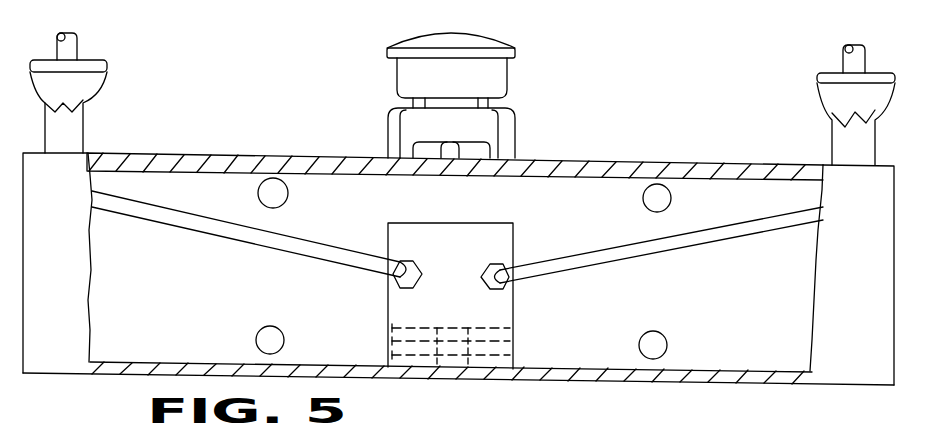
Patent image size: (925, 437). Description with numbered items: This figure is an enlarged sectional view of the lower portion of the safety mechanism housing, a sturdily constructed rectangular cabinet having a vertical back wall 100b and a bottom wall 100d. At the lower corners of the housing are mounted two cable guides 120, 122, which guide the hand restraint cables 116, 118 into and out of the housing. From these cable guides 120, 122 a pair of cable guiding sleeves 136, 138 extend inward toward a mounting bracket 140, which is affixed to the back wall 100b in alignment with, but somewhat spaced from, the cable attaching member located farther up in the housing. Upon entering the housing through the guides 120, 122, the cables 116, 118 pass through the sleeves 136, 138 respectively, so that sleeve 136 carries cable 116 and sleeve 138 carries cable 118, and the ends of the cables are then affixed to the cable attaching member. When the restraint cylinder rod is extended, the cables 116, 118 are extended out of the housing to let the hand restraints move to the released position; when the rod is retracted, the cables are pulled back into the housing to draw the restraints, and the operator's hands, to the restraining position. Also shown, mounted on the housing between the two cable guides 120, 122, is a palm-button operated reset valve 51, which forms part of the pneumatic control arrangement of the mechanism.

The cable 118 is at (68, 50).
The cable guide 122 is at (92, 93).
The palm-button operated reset valve 51 is at (493, 78).
The cable 116 is at (848, 58).
The cable guide 120 is at (828, 103).
The cable guiding sleeve 138 is at (280, 240).
The cable guiding sleeve 136 is at (638, 250).
The mounting bracket 140 is at (498, 314).
The bottom wall 100d is at (822, 283).
The vertical back wall 100b is at (585, 373).